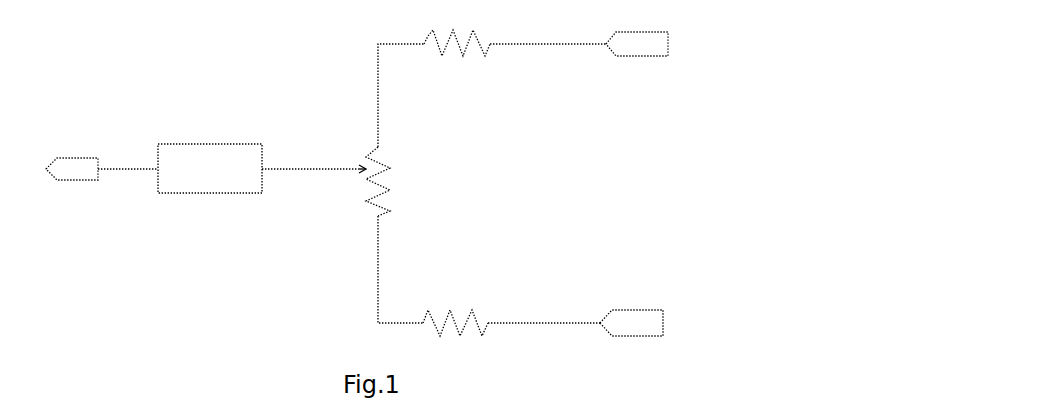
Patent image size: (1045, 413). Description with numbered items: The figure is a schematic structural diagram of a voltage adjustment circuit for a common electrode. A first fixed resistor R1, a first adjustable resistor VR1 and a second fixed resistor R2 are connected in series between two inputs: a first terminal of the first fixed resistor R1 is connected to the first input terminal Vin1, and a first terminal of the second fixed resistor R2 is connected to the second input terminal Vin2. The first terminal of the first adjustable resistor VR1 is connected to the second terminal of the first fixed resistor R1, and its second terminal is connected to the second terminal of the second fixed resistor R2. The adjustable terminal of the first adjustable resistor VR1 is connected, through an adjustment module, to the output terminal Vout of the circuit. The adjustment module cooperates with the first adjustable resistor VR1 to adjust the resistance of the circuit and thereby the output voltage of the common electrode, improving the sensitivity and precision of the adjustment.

The first fixed resistor R1 is at (457, 54).
The second fixed resistor R2 is at (455, 335).
The first adjustable resistor VR1 is at (391, 181).
The first input terminal Vin1 is at (650, 44).
The second input terminal Vin2 is at (645, 323).
The output terminal Vout is at (102, 160).